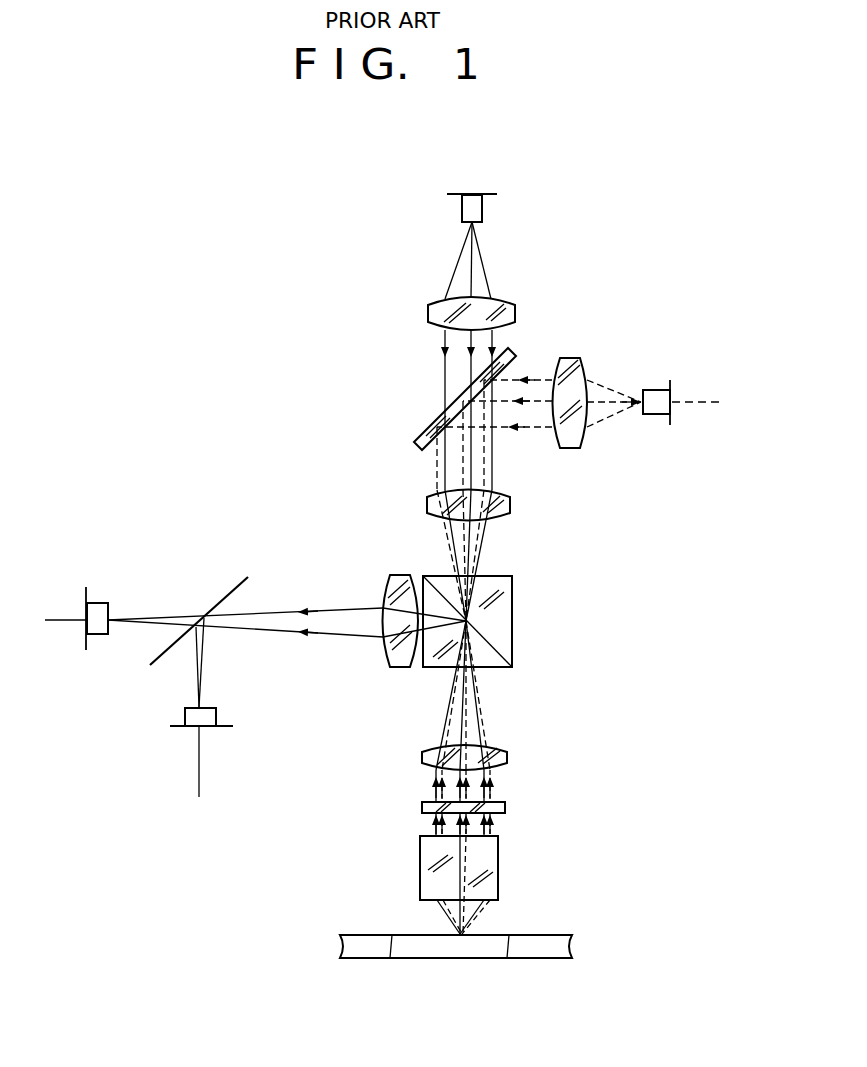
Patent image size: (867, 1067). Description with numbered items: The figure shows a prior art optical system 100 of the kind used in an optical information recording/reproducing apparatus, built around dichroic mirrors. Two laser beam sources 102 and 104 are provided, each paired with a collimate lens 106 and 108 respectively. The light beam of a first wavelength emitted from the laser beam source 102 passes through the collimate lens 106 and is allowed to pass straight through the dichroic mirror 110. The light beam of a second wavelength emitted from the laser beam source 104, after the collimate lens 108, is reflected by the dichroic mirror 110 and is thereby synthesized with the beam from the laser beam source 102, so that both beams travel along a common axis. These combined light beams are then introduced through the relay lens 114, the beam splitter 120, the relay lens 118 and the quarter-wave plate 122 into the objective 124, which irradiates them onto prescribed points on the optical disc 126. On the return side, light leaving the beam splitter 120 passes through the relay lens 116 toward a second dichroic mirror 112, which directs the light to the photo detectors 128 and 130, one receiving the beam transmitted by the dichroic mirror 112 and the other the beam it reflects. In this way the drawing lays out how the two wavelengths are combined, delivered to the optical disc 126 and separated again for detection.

The optical system 100 is at (328, 430).
The laser beam source 102 is at (483, 210).
The laser beam source 104 is at (656, 390).
The collimate lens 106 is at (428, 314).
The collimate lens 108 is at (578, 437).
The dichroic mirror 110 is at (420, 433).
The dichroic mirror 112 is at (232, 590).
The relay lens 114 is at (510, 503).
The relay lens 116 is at (402, 582).
The relay lens 118 is at (507, 755).
The beam splitter 120 is at (512, 620).
The λ/4 plate 122 is at (505, 808).
The objective 124 is at (498, 855).
The optical disc 126 is at (545, 940).
The photo detector 128 is at (97, 603).
The photo detector 130 is at (217, 709).